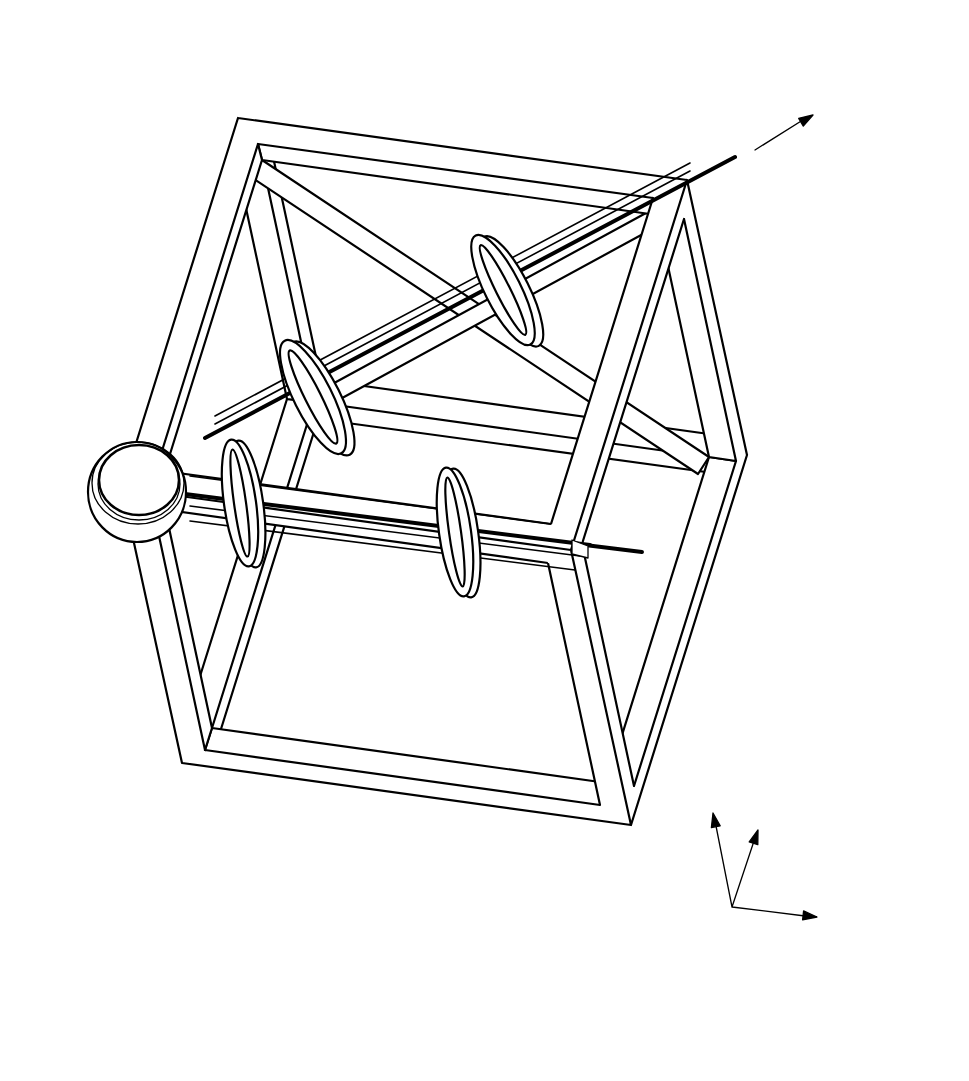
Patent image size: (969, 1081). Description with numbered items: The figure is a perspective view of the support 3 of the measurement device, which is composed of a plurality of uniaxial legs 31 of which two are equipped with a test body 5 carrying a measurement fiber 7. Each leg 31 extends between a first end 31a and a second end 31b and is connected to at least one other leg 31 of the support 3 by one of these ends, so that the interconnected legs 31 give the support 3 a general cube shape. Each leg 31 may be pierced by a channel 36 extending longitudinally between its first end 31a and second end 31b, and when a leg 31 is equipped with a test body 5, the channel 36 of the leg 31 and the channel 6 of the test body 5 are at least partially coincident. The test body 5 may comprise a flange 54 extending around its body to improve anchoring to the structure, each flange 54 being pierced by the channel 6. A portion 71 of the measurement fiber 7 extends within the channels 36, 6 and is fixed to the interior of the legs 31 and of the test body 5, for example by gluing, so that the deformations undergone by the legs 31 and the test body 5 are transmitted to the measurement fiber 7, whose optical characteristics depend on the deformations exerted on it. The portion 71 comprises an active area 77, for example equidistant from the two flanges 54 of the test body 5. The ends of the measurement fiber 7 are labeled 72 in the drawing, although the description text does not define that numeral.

The support 3 is at (226, 90).
The legs 31 is at (434, 455).
The first end of leg 31a is at (558, 560).
The second end of leg 31b is at (170, 527).
The rod end 72 is at (712, 165).
The measurement fiber 7 is at (588, 553).
The channel of leg 36 is at (580, 555).
The flange 54 is at (447, 592).
The active area 77 is at (312, 514).
The test body 5 is at (342, 517).
The channel of test body 6 is at (370, 522).
The portion of measurement fiber 71 is at (398, 522).